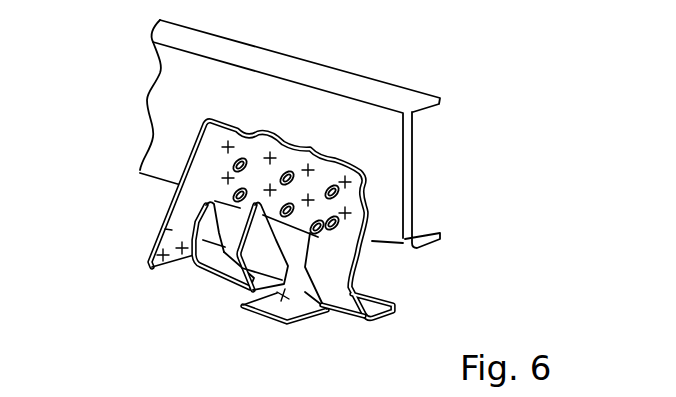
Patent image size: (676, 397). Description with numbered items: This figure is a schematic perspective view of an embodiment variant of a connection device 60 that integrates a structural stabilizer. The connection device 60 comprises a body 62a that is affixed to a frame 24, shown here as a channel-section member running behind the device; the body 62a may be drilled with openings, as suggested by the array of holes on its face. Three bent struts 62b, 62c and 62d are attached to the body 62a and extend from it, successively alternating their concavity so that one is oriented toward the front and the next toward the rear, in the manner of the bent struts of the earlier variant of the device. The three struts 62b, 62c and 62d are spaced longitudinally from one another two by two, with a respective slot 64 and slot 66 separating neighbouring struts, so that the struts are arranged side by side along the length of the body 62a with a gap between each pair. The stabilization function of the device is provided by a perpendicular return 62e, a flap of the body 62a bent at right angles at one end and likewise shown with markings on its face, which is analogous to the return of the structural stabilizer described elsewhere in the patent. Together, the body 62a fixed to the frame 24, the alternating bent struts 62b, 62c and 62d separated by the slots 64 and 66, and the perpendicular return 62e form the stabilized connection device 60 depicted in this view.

The frame 24 is at (187, 82).
The connection device 60 is at (108, 196).
The body 62a is at (285, 153).
The bent strut 62b is at (220, 268).
The bent strut 62c is at (267, 313).
The bent strut 62d is at (348, 307).
The perpendicular return 62e is at (157, 225).
The slot 64 is at (249, 219).
The slot 66 is at (321, 238).